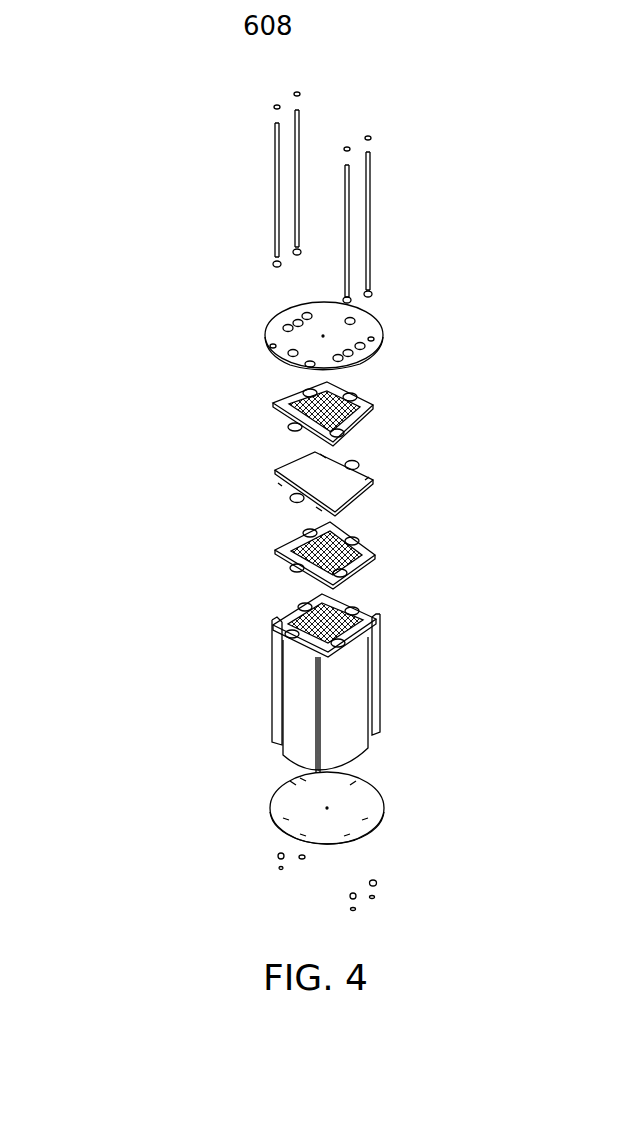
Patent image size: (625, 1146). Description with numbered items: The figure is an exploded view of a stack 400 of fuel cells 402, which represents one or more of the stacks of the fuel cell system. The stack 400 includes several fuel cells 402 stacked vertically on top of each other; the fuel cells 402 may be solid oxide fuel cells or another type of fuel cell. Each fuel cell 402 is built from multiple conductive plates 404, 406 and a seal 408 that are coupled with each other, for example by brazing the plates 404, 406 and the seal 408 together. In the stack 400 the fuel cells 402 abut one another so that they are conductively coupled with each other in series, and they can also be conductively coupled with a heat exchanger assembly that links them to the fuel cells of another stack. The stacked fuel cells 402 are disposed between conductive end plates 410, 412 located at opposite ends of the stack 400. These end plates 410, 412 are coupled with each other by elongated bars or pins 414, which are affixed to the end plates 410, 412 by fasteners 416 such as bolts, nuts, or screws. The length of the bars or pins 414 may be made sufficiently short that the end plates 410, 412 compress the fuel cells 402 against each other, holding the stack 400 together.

The stack 400 is at (115, 92).
The fuel cells 402 is at (233, 371).
The conductive plate 404 is at (369, 573).
The conductive plate 406 is at (384, 407).
The seal 408 is at (376, 500).
The conductive end plate 410 is at (391, 803).
The conductive end plate 412 is at (383, 362).
The elongated bars or pins 414 is at (377, 203).
The fasteners 416 is at (376, 127).